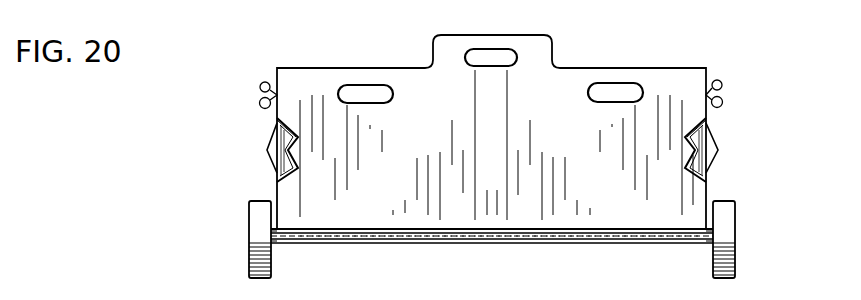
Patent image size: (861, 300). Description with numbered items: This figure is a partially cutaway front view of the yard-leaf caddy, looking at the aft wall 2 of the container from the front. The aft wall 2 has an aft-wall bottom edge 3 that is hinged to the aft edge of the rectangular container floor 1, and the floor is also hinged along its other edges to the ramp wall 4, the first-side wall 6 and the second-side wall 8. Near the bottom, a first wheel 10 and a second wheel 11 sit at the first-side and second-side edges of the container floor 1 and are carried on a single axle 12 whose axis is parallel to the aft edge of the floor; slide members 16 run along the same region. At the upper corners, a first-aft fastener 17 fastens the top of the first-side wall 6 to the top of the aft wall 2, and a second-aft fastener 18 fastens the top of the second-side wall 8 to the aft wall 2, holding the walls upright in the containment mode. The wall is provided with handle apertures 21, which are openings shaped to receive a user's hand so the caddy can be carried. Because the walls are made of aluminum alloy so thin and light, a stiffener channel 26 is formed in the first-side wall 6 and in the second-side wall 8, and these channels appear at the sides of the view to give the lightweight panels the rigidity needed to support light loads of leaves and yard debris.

The container floor 1 is at (388, 232).
The aft wall 2 is at (283, 133).
The aft-wall bottom edge 3 is at (302, 228).
The ramp wall 4 is at (470, 128).
The first-side wall 6 is at (283, 172).
The second-side wall 8 is at (712, 130).
The first wheel 10 is at (262, 274).
The second wheel 11 is at (725, 270).
The axle 12 is at (274, 246).
The slide members 16 is at (495, 232).
The first-aft fastener 17 is at (262, 92).
The second-aft fastener 18 is at (722, 88).
The handle aperture 21 is at (485, 57).
The stiffener channel 26 is at (268, 150).